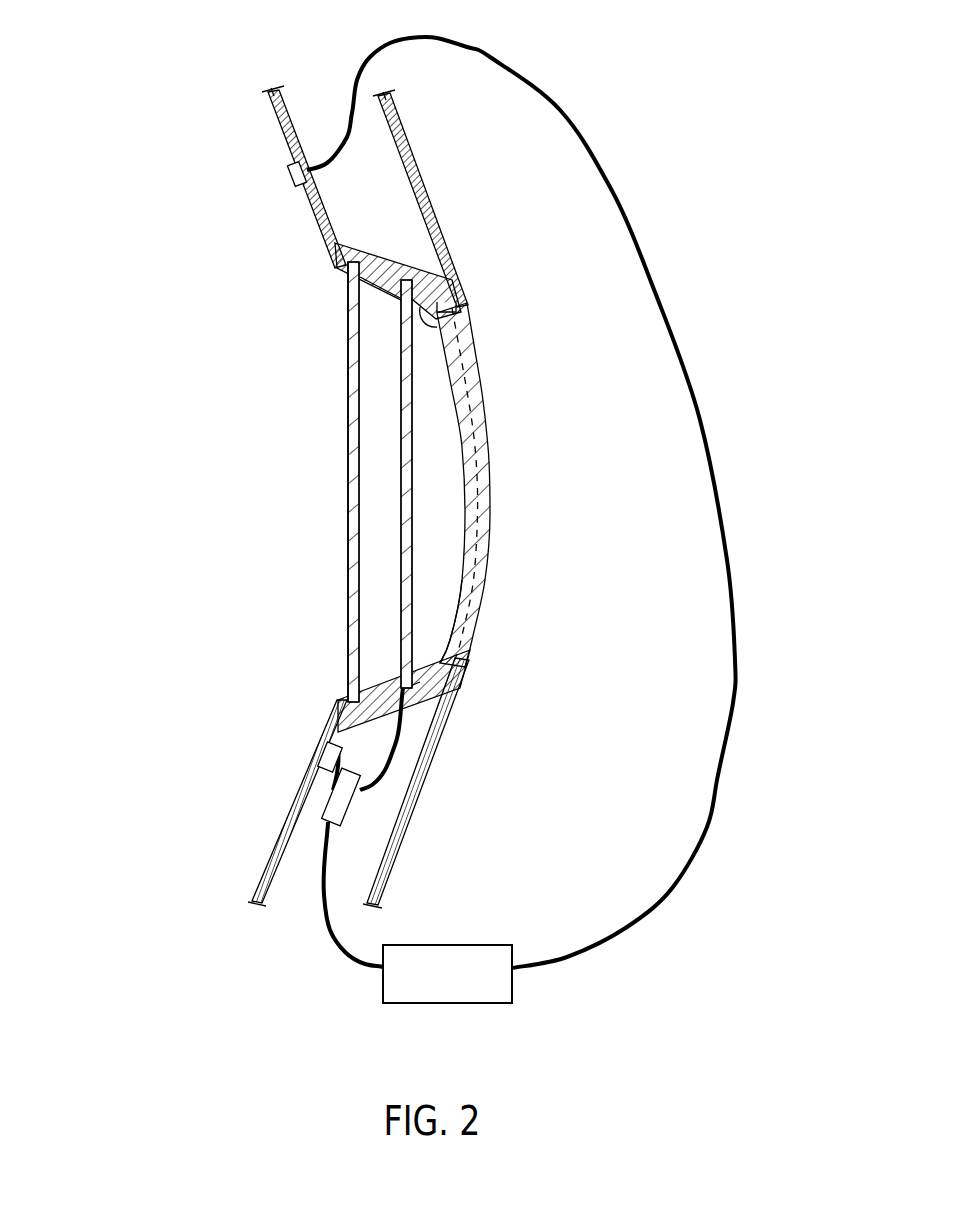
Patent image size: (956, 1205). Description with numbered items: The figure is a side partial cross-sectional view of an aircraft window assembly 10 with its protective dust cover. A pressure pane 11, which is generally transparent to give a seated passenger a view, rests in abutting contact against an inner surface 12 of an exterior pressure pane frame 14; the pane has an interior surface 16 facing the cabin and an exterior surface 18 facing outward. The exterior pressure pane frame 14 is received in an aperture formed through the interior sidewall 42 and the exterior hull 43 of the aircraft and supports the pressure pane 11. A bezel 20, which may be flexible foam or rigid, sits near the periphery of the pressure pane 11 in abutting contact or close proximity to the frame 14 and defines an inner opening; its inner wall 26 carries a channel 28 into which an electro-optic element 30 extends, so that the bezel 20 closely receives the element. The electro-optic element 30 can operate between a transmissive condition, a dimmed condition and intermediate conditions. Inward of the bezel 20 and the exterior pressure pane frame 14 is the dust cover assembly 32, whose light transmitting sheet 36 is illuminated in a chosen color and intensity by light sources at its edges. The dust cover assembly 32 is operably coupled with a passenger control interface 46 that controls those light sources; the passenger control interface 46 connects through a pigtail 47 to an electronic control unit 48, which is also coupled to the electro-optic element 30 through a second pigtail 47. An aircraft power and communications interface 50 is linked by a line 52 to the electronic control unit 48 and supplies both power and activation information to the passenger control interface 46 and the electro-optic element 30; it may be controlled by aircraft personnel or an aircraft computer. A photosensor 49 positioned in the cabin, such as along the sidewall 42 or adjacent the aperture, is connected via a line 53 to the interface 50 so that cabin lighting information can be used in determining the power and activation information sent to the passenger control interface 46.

The aircraft window assembly 10 is at (126, 305).
The pressure pane 11 is at (492, 545).
The inner surface 12 is at (443, 268).
The exterior pressure pane frame 14 is at (467, 677).
The interior surface 16 is at (462, 478).
The exterior surface 18 is at (457, 620).
The bezel 20 is at (402, 268).
The inner wall 26 is at (460, 327).
The channel 28 is at (415, 668).
The electro-optic element 30 is at (417, 400).
The dust cover assembly 32 is at (345, 515).
The light transmitting sheet 36 is at (350, 425).
The interior sidewall 42 is at (313, 216).
The exterior hull 43 is at (417, 150).
The passenger control interface 46 is at (325, 752).
The pigtail 47 is at (397, 737).
The electronic control unit 48 is at (342, 802).
The photosensor 49 is at (290, 174).
The aircraft power and communications interface 50 is at (480, 945).
The line 52 is at (322, 897).
The line 53 is at (734, 705).